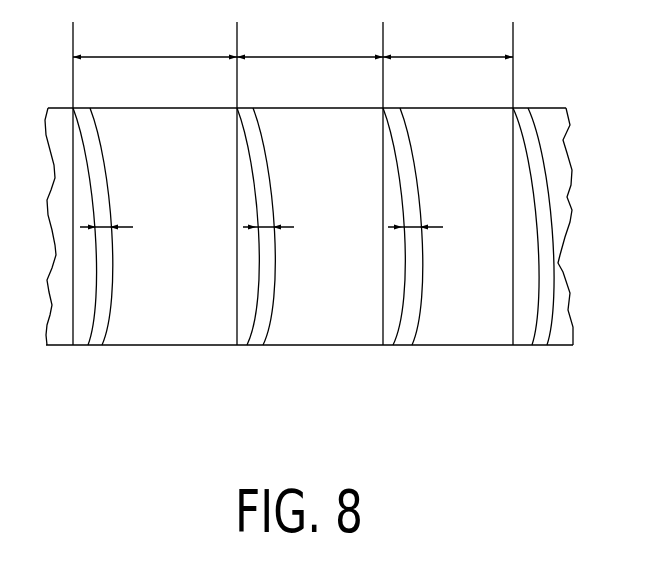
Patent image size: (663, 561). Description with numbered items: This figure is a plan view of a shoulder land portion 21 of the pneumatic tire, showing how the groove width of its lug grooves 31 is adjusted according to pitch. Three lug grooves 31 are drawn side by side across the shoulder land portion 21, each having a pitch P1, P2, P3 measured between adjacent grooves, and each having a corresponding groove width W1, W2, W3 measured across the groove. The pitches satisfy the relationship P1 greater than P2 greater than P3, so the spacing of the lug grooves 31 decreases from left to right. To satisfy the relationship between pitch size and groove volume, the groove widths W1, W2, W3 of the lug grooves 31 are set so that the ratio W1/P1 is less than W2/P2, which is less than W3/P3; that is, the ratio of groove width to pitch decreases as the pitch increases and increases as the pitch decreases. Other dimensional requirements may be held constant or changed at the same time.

The shoulder land portion 21 is at (545, 105).
The lug groove 31 is at (102, 305).
The pitch P1 is at (155, 43).
The pitch P2 is at (310, 43).
The pitch P3 is at (448, 43).
The groove width W1 is at (118, 213).
The groove width W2 is at (279, 213).
The groove width W3 is at (430, 213).